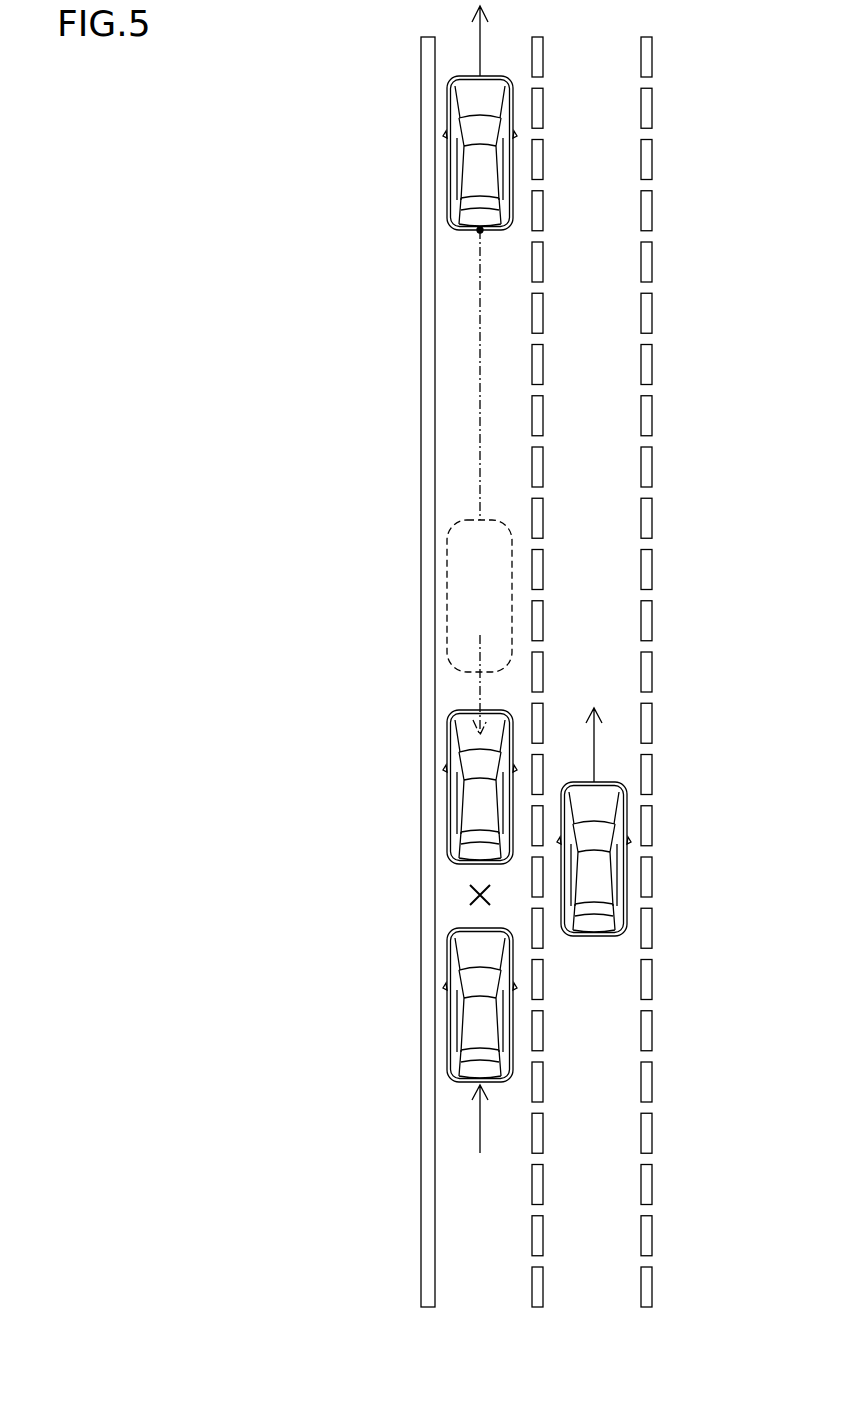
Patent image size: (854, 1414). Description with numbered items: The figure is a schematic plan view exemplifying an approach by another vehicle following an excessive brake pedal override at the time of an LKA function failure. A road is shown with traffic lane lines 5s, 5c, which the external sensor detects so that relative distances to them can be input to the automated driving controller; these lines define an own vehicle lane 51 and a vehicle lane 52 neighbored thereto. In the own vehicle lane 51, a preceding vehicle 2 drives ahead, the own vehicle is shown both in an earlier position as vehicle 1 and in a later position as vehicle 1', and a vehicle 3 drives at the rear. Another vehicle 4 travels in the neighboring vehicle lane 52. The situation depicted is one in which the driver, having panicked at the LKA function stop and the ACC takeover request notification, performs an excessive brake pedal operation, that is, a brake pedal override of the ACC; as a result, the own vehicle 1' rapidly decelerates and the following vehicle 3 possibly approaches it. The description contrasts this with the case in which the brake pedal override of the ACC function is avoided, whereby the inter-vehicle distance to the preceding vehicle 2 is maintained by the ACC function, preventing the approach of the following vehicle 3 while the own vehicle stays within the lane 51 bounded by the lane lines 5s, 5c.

The vehicle itself 1 is at (437, 482).
The vehicle itself 1' is at (442, 807).
The preceding vehicle 2 is at (450, 173).
The following vehicle 3 is at (450, 1028).
The other vehicle 4 is at (628, 902).
The traffic lane line 5s is at (422, 1290).
The traffic lane line 5c is at (533, 1288).
The lane 51 is at (439, 693).
The lane 52 is at (639, 1044).